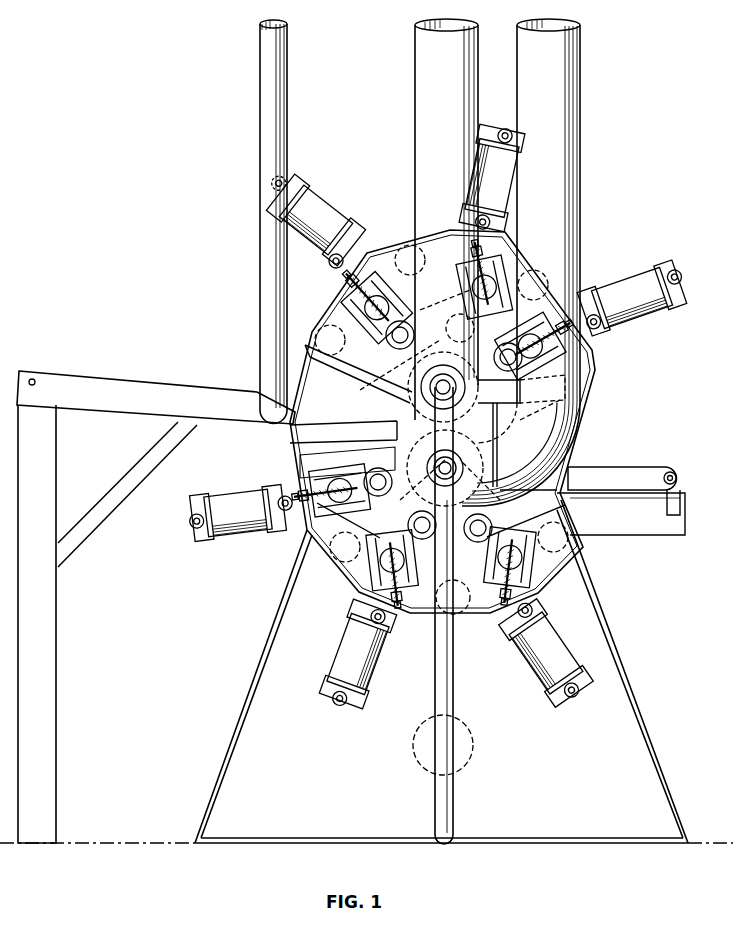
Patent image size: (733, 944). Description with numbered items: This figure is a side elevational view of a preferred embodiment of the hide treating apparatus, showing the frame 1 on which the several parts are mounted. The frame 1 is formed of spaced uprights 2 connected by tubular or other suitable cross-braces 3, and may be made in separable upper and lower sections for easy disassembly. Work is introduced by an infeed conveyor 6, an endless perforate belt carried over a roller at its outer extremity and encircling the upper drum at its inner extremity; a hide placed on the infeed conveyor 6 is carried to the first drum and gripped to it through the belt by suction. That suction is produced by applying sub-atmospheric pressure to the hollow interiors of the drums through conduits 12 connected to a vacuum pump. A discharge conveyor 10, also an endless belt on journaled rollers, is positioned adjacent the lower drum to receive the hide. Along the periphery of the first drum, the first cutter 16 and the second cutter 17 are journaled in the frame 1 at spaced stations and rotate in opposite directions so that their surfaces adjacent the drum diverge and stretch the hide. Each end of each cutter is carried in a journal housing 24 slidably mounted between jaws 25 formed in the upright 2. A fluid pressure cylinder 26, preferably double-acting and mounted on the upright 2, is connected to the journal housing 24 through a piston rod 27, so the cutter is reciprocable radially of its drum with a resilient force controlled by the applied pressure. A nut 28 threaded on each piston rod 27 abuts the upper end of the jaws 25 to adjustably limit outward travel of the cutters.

The frame 1 is at (389, 240).
The uprights 2 is at (608, 624).
The cross-braces 3 is at (420, 265).
The infeed conveyor 6 is at (149, 380).
The discharge conveyor 10 is at (622, 468).
The conduits 12 is at (416, 92).
The first cutter 16 is at (330, 352).
The second cutter 17 is at (522, 384).
The journal housing 24 is at (372, 340).
The jaws 25 is at (352, 318).
The fluid pressure cylinder 26 is at (306, 213).
The piston rod 27 is at (358, 300).
The nut 28 is at (356, 288).